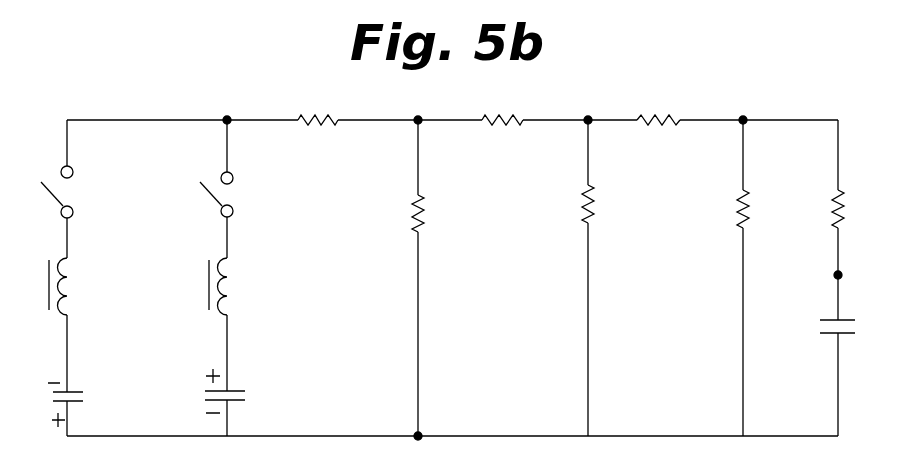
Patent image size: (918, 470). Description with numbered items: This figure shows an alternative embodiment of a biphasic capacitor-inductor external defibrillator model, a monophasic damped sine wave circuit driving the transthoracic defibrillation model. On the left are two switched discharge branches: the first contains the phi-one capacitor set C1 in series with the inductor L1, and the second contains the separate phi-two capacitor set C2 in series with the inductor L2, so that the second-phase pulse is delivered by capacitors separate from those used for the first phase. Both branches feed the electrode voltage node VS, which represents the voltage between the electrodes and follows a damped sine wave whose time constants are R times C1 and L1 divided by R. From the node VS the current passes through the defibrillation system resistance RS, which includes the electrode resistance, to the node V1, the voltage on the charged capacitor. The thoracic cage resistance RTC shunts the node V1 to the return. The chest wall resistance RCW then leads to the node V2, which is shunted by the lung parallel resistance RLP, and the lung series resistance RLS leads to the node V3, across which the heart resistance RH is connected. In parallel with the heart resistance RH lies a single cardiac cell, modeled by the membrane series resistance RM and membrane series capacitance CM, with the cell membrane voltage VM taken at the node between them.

The inductor L1 is at (41, 282).
The inductor L2 is at (200, 282).
The phi-one capacitor set C1 is at (50, 397).
The phi-two capacitor set C2 is at (207, 390).
The electrode voltage node VS is at (218, 99).
The node voltage V1 is at (412, 103).
The node voltage V2 is at (587, 103).
The node voltage V3 is at (741, 104).
The cell membrane voltage VM is at (858, 271).
The defibrillation system resistance RS is at (318, 140).
The chest wall resistance RCW is at (511, 140).
The lung series resistance RLS is at (658, 140).
The thoracic cage resistance RTC is at (441, 280).
The lung parallel resistance RLP is at (609, 278).
The heart resistance RH is at (760, 278).
The membrane series resistance RM is at (855, 220).
The membrane series capacitance CM is at (854, 372).